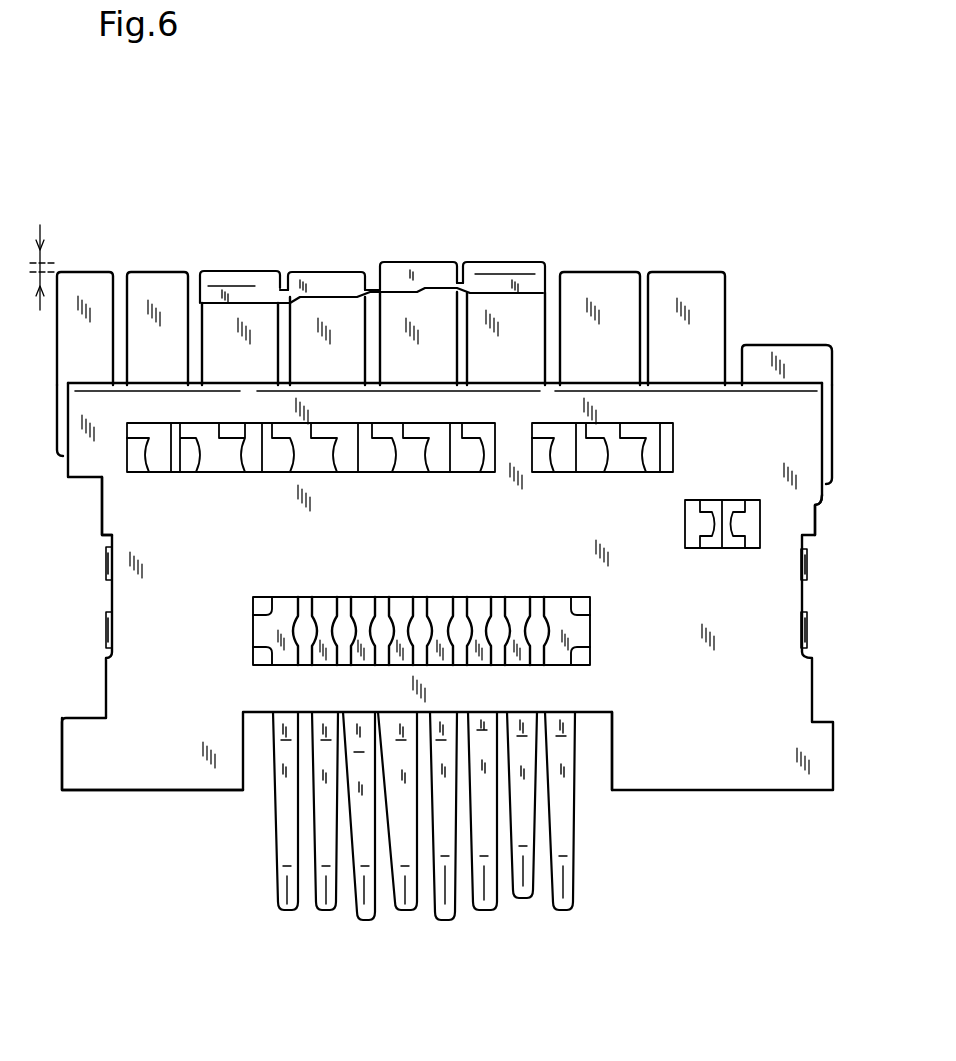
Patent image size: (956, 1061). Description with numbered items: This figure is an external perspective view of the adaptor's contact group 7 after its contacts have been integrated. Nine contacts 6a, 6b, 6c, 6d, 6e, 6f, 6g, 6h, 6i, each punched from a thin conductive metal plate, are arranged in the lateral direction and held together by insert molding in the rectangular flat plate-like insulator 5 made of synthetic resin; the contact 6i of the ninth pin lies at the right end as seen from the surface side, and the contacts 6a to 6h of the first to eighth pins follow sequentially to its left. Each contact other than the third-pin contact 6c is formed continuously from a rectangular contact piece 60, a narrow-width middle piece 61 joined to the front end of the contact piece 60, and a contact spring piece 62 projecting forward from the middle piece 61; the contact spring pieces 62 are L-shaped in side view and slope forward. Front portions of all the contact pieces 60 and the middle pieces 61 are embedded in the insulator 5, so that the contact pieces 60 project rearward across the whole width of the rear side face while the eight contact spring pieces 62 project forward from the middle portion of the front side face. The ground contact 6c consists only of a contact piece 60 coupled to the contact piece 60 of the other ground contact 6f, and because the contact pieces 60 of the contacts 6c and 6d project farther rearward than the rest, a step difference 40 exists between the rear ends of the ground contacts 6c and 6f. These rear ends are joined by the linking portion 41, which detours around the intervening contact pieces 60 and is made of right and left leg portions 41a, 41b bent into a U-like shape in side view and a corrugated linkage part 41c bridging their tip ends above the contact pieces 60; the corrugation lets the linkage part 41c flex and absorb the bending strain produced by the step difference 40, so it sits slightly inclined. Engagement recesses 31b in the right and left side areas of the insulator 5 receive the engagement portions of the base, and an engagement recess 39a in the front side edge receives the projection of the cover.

The insulator 5 is at (757, 772).
The contact group 7 is at (134, 802).
The engagement recess 31b is at (98, 502).
The engagement recess 39a is at (585, 716).
The step difference 40 is at (42, 245).
The linking portion 41 is at (497, 152).
The leg portion 41a is at (258, 290).
The leg portion 41b is at (502, 280).
The linkage part 41c is at (405, 287).
The contact 6a is at (683, 268).
The contact 6b is at (606, 268).
The contact 6c is at (527, 330).
The contact 6d is at (438, 312).
The contact 6e is at (340, 322).
The contact 6f is at (216, 326).
The contact 6g is at (157, 270).
The contact 6h is at (95, 270).
The contact 6i is at (760, 340).
The contact piece 60 is at (701, 367).
The middle piece 61 is at (400, 606).
The contact spring piece 62 is at (397, 827).